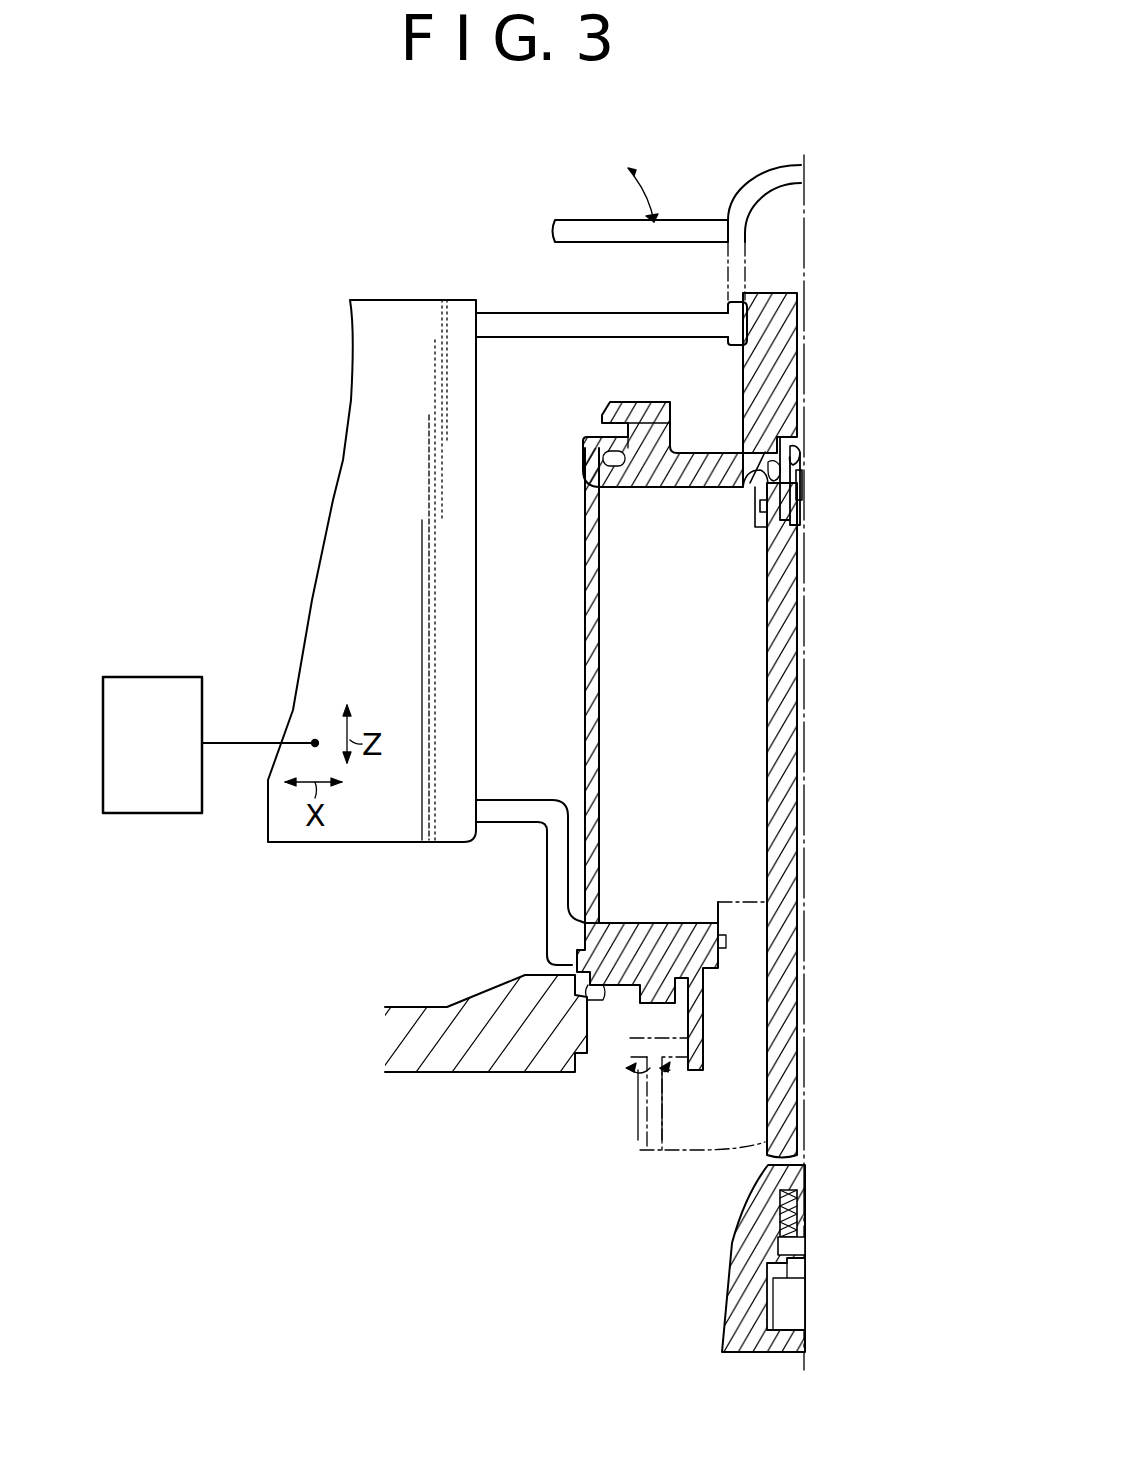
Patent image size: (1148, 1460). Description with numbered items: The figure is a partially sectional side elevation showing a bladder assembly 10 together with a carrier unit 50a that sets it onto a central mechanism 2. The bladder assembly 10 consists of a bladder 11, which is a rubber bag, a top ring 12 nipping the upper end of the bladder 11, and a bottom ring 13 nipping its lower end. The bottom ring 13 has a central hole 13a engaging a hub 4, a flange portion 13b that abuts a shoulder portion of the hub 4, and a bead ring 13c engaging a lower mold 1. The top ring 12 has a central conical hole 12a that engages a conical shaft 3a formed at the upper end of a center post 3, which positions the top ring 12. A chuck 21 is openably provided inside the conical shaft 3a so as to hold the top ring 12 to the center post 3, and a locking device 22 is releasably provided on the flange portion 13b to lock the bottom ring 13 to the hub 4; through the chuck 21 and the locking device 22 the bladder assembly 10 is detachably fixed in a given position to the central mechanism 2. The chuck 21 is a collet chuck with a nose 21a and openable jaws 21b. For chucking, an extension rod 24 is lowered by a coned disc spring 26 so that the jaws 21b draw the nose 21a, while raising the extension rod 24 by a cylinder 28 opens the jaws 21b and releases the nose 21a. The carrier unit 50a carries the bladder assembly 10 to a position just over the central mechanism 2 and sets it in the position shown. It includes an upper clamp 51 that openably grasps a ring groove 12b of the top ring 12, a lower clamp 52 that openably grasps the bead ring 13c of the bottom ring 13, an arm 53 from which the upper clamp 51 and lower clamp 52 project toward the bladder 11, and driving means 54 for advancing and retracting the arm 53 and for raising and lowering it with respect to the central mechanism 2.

The lower mold 1 is at (435, 1005).
The central mechanism 2 is at (712, 775).
The center post 3 is at (743, 752).
The conical shaft 3a is at (758, 480).
The hub 4 is at (682, 1130).
The bladder assembly 10 is at (644, 773).
The bladder 11 is at (599, 718).
The top ring 12 is at (660, 488).
The central conical hole 12a is at (760, 466).
The ring groove 12b is at (728, 336).
The bottom ring 13 is at (678, 922).
The central hole 13a is at (705, 995).
The flange portion 13b is at (690, 1062).
The bead ring 13c is at (594, 988).
The chuck 21 is at (839, 479).
The nose 21a is at (800, 492).
The jaws 21b is at (797, 444).
The locking device 22 is at (626, 1082).
The extension rod 24 is at (797, 800).
The coned disc spring 26 is at (800, 1207).
The cylinder 28 is at (790, 1300).
The carrier unit 50a is at (531, 565).
The upper clamp 51 is at (604, 313).
The lower clamp 52 is at (520, 824).
The arm 53 is at (476, 663).
The driving means 54 is at (184, 677).